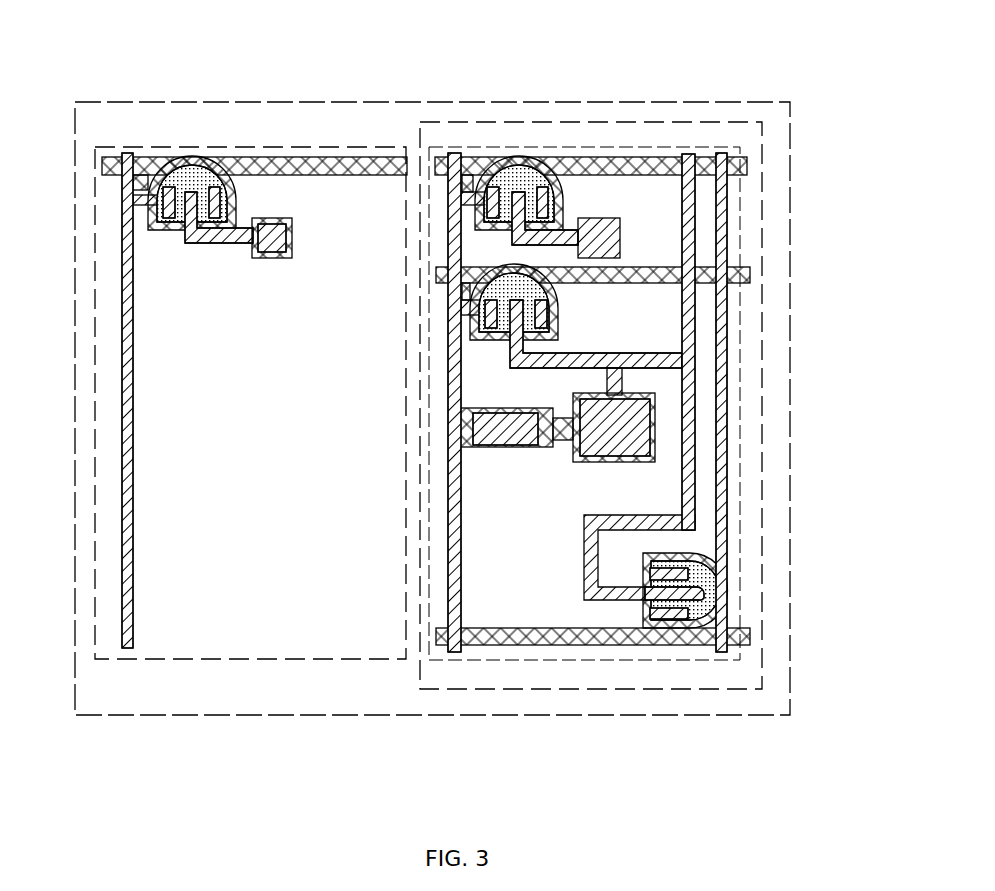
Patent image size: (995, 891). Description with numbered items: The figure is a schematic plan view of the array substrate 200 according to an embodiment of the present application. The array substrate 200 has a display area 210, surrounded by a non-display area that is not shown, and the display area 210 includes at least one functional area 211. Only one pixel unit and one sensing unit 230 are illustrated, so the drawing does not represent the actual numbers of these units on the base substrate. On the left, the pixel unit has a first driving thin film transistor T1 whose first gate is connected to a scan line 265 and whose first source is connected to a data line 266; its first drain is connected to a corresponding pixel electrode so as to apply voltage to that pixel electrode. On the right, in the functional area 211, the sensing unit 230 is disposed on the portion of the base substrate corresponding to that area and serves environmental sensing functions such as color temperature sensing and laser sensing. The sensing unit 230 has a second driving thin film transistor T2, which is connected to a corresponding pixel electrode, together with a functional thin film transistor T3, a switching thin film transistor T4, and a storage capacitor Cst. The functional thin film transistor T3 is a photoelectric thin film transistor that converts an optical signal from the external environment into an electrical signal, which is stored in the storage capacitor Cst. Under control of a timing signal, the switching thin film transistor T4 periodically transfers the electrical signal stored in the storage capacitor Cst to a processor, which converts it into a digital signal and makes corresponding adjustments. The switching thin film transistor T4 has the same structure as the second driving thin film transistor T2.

The array substrate 200 is at (802, 188).
The display area 210 is at (265, 102).
The functional area 211 is at (610, 122).
The sensing unit 230 is at (684, 152).
The scan line 265 is at (325, 153).
The data line 266 is at (123, 292).
The first driving thin film transistor T1 is at (200, 155).
The second driving thin film transistor T2 is at (510, 157).
The functional thin film transistor T3 is at (560, 322).
The switching thin film transistor T4 is at (705, 572).
The storage capacitor Cst is at (655, 418).